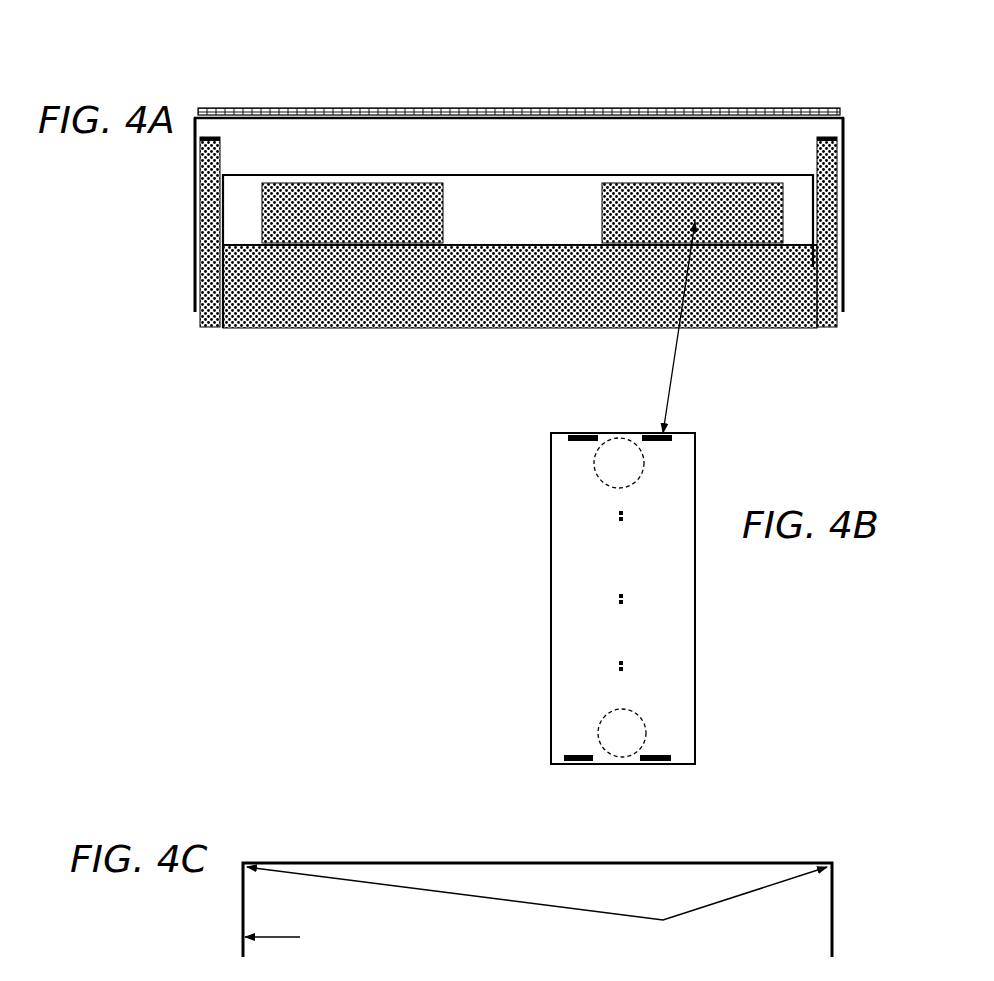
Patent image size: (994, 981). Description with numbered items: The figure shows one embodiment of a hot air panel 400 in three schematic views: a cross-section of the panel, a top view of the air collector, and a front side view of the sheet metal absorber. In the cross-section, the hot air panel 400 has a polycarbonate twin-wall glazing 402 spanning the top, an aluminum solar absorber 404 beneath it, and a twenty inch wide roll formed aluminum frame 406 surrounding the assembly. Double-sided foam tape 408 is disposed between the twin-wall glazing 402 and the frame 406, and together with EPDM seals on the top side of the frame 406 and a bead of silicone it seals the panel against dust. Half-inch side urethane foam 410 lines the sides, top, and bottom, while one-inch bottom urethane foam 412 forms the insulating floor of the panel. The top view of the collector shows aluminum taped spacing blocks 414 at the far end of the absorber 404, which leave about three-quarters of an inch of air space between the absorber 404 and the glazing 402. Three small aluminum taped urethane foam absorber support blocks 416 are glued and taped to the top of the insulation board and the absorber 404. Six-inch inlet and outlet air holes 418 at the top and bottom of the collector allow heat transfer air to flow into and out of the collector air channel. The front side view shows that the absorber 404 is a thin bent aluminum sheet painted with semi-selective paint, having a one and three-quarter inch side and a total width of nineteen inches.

In FIG. 4A, the hot air panel 400 is at (197, 69).
In FIG. 4A, the polycarbonate twin-wall glazing 402 is at (341, 108).
In FIG. 4A, the aluminum solar absorber 404 is at (516, 172).
In FIG. 4C, the aluminum solar absorber 404 is at (742, 848).
In FIG. 4A, the roll formed aluminum frame 406 is at (848, 118).
In FIG. 4A, the double-sided foam tape 408 is at (201, 150).
In FIG. 4A, the side urethane foam 410 is at (210, 300).
In FIG. 4A, the bottom urethane foam 412 is at (528, 307).
In FIG. 4B, the aluminum taped spacing blocks 414 is at (568, 442).
In FIG. 4B, the absorber support blocks 416 is at (613, 522).
In FIG. 4B, the inlet and outlet air holes 418 is at (600, 725).